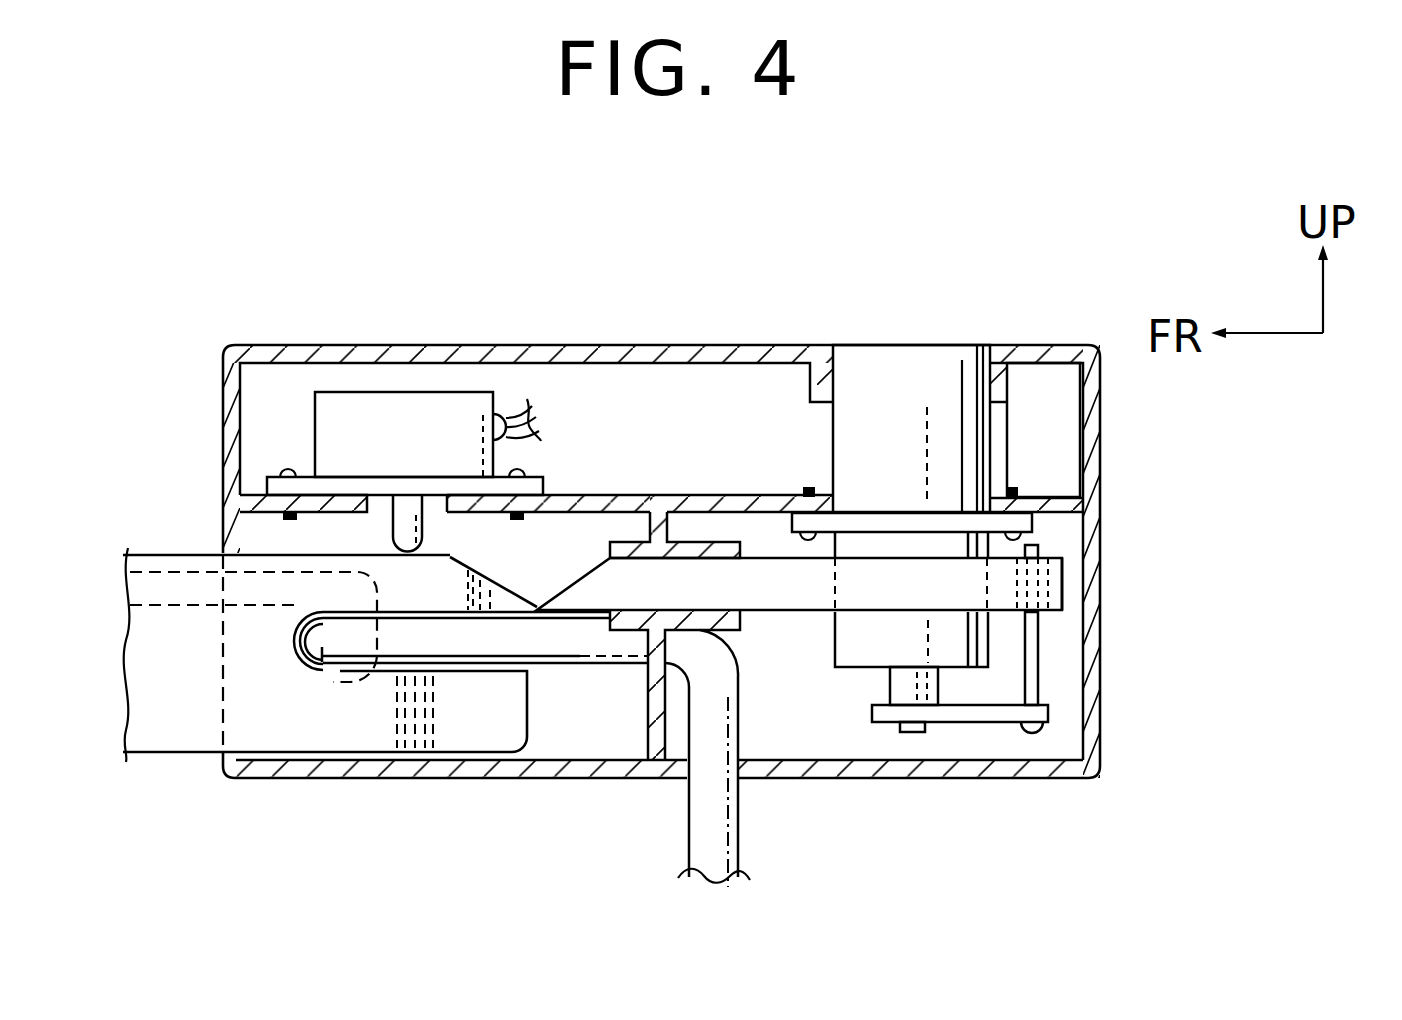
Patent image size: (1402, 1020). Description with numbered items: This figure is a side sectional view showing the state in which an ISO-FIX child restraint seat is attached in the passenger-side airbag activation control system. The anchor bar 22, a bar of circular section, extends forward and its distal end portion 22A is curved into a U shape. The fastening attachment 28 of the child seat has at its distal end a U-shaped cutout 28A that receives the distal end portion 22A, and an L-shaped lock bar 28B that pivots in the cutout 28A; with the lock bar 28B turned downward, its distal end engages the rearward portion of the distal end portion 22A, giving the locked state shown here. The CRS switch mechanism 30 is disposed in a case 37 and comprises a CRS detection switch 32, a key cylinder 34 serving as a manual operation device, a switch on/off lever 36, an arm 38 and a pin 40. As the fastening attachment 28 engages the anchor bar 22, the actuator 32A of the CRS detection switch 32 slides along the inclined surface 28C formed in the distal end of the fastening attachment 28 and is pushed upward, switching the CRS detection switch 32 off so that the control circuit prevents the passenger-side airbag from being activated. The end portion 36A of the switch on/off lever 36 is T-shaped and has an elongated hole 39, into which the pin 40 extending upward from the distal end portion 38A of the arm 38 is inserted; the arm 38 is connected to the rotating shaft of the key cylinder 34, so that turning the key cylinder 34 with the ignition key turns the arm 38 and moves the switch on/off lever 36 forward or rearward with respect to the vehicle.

The anchor bar 22 is at (553, 668).
The distal end portion of anchor bar 22A is at (324, 669).
The fastening attachment 28 is at (187, 760).
The cutout 28A is at (455, 663).
The lock bar 28B is at (328, 592).
The inclined surface 28C is at (530, 596).
The CRS switch mechanism 30 is at (1108, 522).
The CRS detection switch 32 is at (468, 405).
The actuator 32A is at (404, 557).
The key cylinder 34 is at (940, 377).
The switch on/off lever 36 is at (800, 616).
The end portion of switch on/off lever 36A is at (1028, 612).
The case 37 is at (1102, 415).
The arm 38 is at (977, 723).
The distal end portion of arm 38A is at (1047, 714).
The elongated hole 39 is at (1046, 629).
The pin 40 is at (1031, 687).